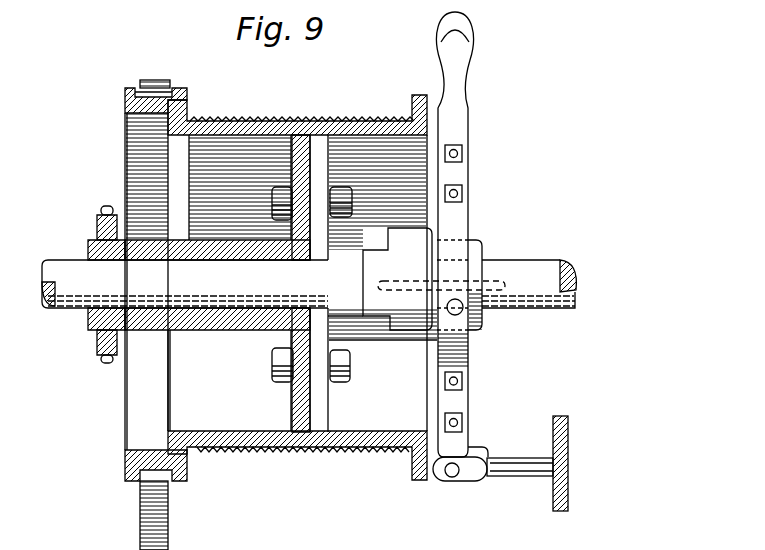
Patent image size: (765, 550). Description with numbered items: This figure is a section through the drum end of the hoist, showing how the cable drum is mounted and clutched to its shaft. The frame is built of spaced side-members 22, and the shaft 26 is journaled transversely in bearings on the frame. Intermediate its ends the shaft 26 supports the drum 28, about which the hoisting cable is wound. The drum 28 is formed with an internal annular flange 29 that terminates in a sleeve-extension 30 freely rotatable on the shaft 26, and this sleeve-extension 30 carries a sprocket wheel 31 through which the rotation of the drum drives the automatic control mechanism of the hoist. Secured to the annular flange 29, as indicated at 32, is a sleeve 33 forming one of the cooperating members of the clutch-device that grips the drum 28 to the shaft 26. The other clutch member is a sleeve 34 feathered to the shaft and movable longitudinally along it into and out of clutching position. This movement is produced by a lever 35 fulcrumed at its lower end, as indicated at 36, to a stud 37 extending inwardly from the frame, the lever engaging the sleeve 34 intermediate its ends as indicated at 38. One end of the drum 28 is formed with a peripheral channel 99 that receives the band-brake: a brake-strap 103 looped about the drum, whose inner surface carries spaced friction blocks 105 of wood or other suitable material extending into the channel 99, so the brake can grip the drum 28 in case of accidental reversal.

The side-member 22 is at (568, 450).
The shaft 26 is at (547, 262).
The drum 28 is at (258, 120).
The internal annular flange 29 is at (300, 133).
The sleeve-extension 30 is at (211, 328).
The sprocket wheel 31 is at (100, 352).
The securing means 32 is at (338, 190).
The sleeve 33 is at (337, 283).
The sleeve 34 is at (416, 297).
The lever 35 is at (466, 172).
The fulcrum 36 is at (452, 478).
The stud 37 is at (521, 477).
The engagement 38 is at (463, 316).
The peripheral channel 99 is at (133, 96).
The brake-strap 103 is at (153, 80).
The friction blocks 105 is at (145, 92).